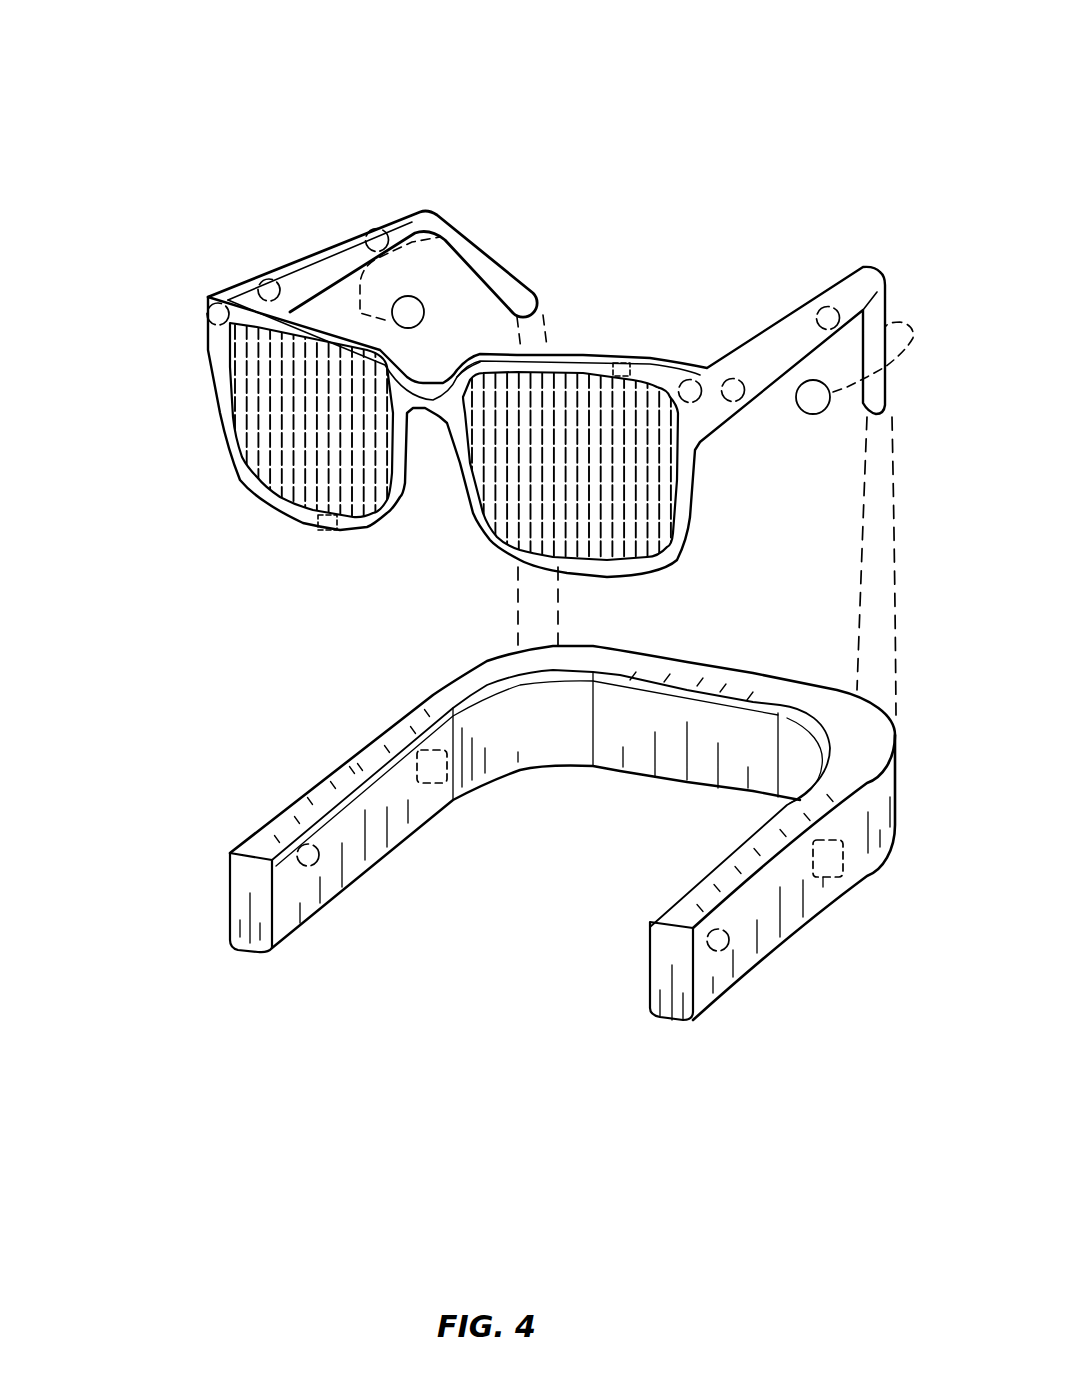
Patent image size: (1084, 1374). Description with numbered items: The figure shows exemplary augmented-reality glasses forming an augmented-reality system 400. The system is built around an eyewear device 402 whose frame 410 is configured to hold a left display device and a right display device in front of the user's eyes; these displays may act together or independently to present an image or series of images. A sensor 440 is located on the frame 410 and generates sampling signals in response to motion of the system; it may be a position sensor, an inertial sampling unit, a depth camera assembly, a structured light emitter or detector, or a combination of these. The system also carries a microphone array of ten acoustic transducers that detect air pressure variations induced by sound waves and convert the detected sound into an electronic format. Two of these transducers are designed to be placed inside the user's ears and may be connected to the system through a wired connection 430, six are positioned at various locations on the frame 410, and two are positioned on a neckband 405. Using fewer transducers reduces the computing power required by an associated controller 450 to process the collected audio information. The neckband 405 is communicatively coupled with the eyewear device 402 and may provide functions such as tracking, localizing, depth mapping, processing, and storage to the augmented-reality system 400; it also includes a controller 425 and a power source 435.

The augmented-reality system 400 is at (125, 95).
The eyewear device 402 is at (440, 210).
The neckband 405 is at (229, 950).
The frame 410 is at (425, 222).
The controller 425 is at (828, 863).
The wired connection 430 is at (885, 583).
The power source 435 is at (433, 771).
The sensor 440 is at (320, 527).
The controller 450 is at (617, 363).